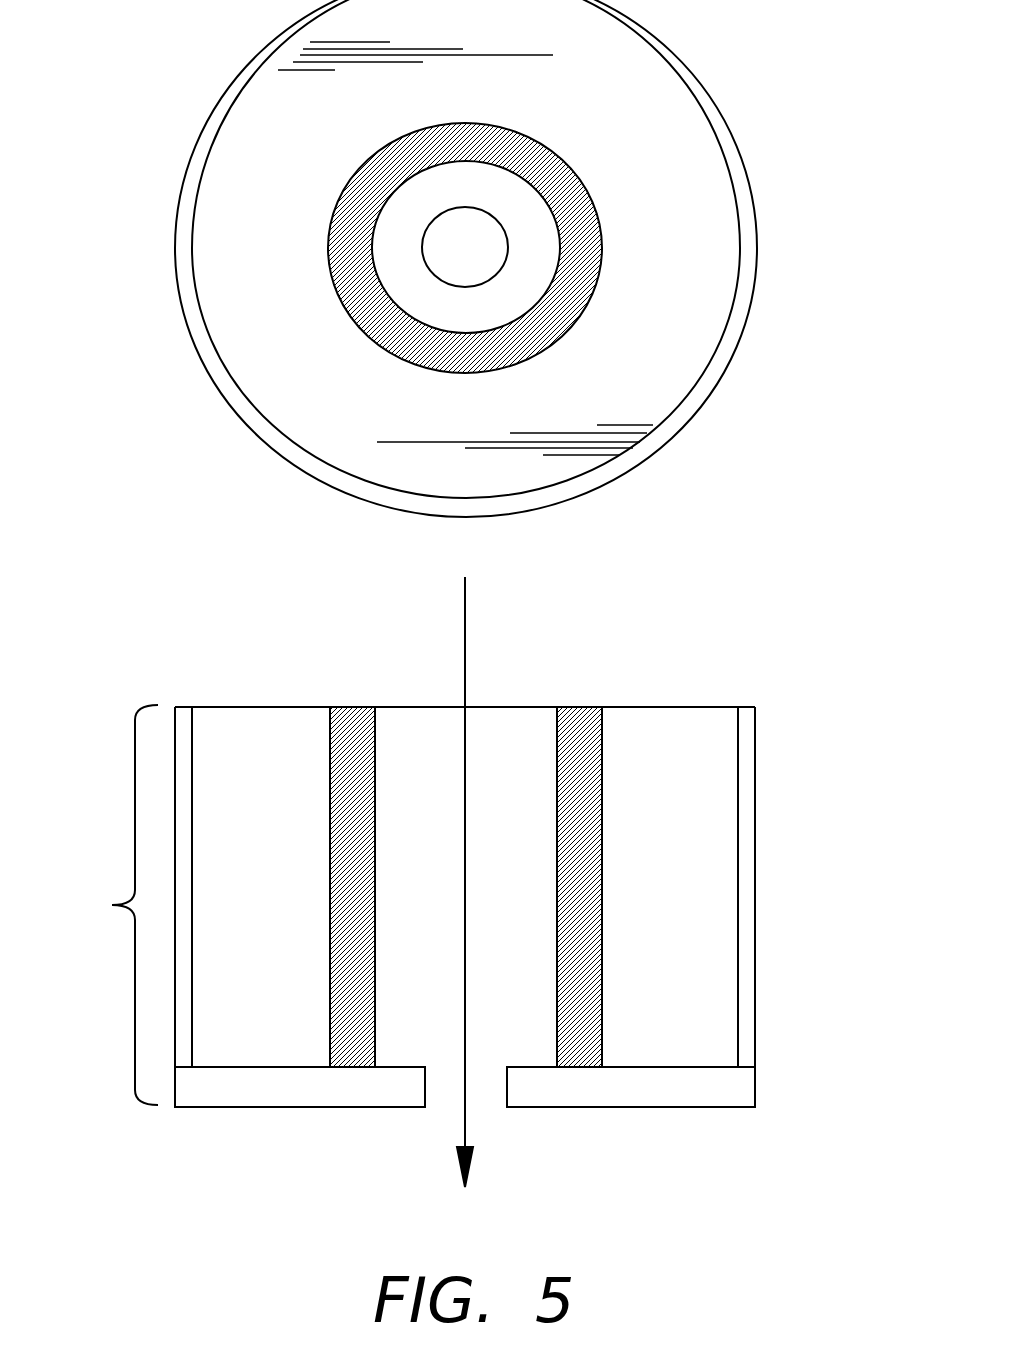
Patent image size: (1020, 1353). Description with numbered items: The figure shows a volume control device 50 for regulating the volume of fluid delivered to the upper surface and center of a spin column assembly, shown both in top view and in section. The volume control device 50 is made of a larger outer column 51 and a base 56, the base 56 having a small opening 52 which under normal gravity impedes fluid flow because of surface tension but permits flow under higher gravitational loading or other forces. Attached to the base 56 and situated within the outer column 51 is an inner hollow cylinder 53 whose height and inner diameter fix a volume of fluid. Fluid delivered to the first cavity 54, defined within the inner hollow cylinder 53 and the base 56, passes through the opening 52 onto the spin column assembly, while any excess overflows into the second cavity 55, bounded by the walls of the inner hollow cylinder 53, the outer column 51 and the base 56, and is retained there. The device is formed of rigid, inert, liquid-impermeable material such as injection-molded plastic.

The volume control device 50 is at (186, 165).
The outer column 51 is at (185, 271).
The opening 52 is at (466, 248).
The inner hollow cylinder 53 is at (360, 185).
The first cavity 54 is at (497, 190).
The second cavity 55 is at (303, 365).
The base 56 is at (263, 1085).